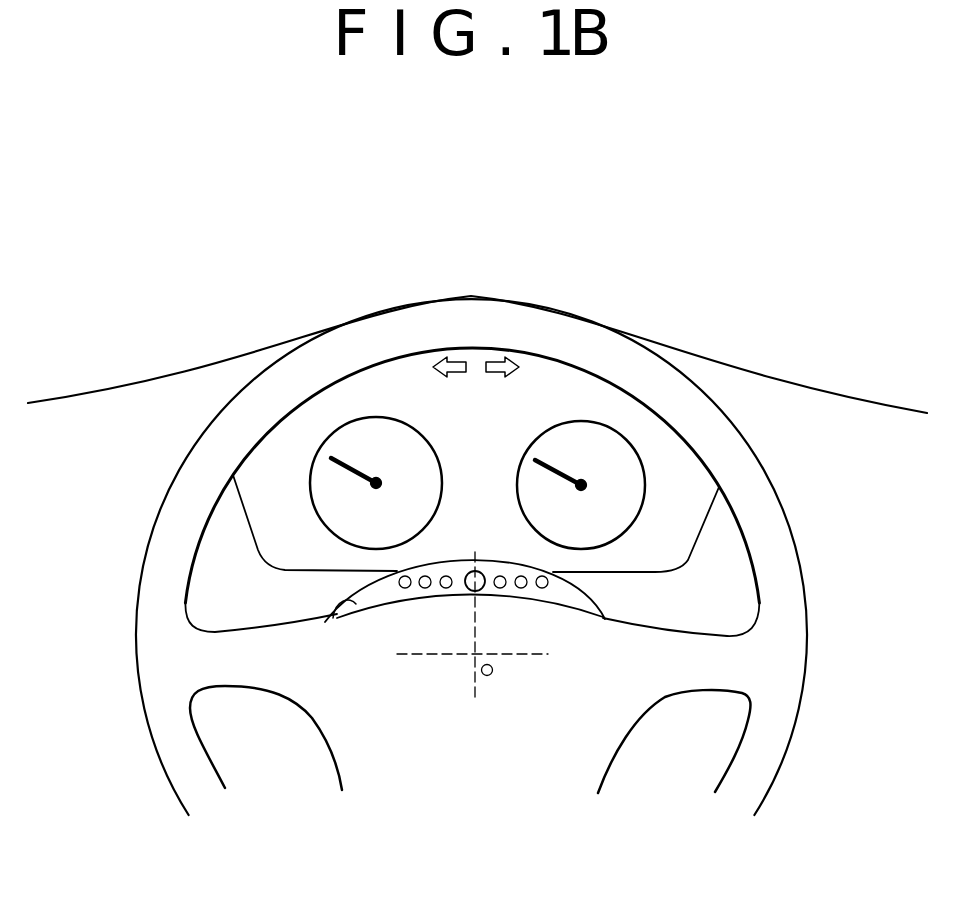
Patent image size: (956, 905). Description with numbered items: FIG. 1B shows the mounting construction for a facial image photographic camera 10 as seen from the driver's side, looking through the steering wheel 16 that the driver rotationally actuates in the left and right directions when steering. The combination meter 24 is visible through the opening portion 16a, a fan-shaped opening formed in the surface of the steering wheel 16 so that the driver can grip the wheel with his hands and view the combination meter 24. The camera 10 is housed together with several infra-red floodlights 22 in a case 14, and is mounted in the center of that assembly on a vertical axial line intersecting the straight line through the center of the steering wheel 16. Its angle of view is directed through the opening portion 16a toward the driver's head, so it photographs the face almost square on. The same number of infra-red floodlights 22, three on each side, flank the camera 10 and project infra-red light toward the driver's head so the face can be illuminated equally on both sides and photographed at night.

The facial image photographic camera 10 is at (467, 592).
The case 14 is at (335, 617).
The steering wheel 16 is at (143, 700).
The opening portion 16a is at (717, 598).
The infra-red floodlights 22 is at (542, 588).
The combination meter 24 is at (400, 397).